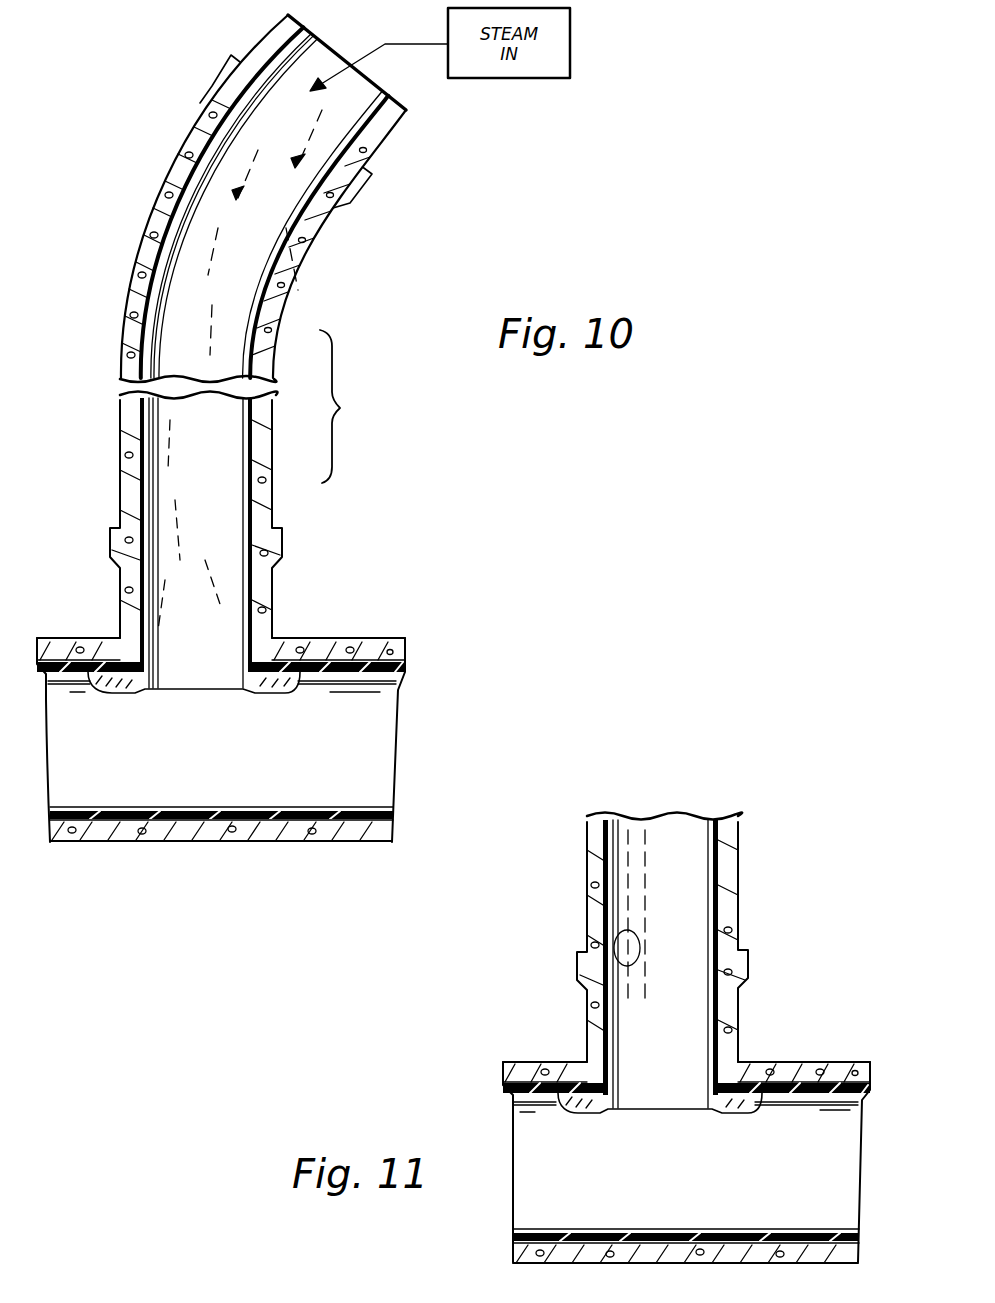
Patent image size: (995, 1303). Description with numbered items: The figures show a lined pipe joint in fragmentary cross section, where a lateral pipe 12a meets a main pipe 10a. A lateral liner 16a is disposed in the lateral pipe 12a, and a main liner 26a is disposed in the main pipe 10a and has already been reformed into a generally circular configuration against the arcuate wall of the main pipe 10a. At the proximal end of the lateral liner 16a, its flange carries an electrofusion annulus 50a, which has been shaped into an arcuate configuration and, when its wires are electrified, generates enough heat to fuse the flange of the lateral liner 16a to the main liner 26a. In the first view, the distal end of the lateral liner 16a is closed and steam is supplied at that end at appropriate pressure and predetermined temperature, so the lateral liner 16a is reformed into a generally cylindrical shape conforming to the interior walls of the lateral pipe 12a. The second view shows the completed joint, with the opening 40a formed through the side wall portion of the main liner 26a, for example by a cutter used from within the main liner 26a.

In FIG. 10, the main pipe 10a is at (367, 640).
In FIG. 11, the main pipe 10a is at (515, 1062).
In FIG. 10, the lateral pipe 12a is at (270, 507).
In FIG. 11, the lateral pipe 12a is at (588, 905).
In FIG. 10, the lateral liner 16a is at (270, 278).
In FIG. 11, the lateral liner 16a is at (636, 962).
In FIG. 10, the main liner 26a is at (378, 670).
In FIG. 11, the main liner 26a is at (513, 1120).
In FIG. 11, the opening 40a is at (640, 1102).
In FIG. 10, the electrofusion annulus 50a is at (270, 698).